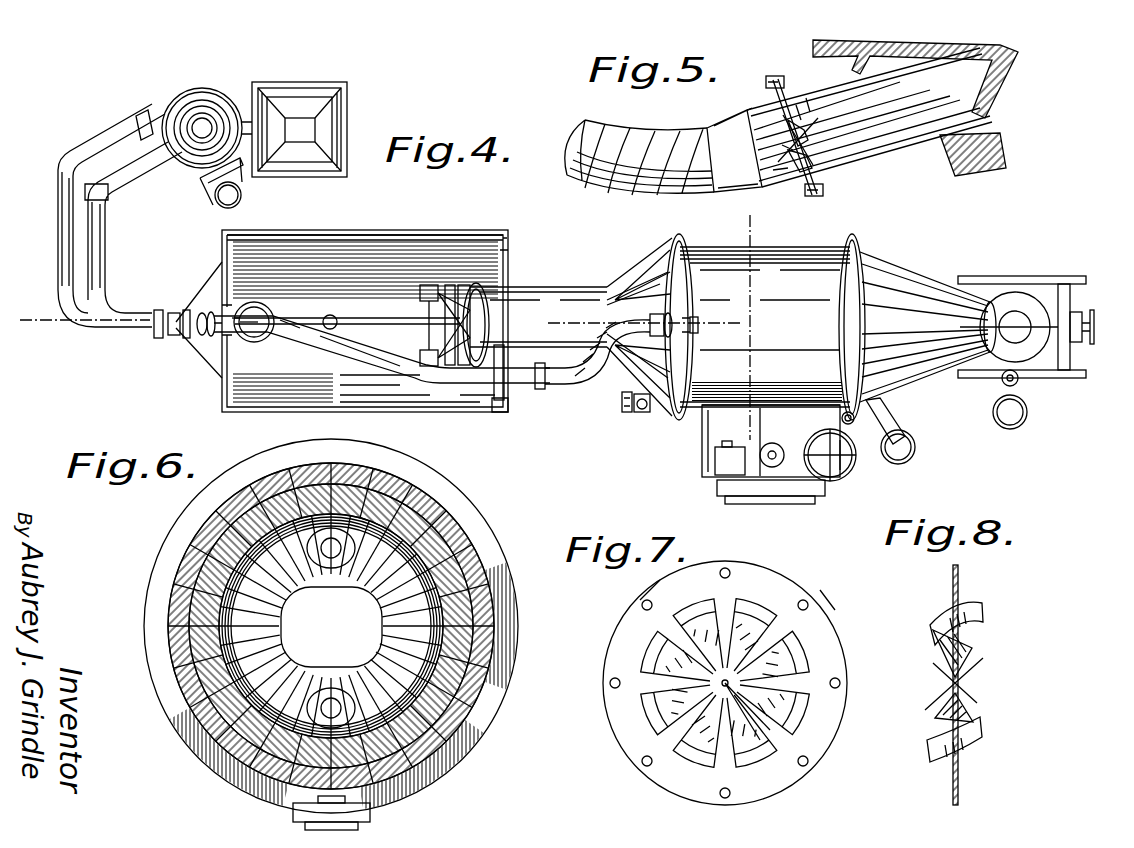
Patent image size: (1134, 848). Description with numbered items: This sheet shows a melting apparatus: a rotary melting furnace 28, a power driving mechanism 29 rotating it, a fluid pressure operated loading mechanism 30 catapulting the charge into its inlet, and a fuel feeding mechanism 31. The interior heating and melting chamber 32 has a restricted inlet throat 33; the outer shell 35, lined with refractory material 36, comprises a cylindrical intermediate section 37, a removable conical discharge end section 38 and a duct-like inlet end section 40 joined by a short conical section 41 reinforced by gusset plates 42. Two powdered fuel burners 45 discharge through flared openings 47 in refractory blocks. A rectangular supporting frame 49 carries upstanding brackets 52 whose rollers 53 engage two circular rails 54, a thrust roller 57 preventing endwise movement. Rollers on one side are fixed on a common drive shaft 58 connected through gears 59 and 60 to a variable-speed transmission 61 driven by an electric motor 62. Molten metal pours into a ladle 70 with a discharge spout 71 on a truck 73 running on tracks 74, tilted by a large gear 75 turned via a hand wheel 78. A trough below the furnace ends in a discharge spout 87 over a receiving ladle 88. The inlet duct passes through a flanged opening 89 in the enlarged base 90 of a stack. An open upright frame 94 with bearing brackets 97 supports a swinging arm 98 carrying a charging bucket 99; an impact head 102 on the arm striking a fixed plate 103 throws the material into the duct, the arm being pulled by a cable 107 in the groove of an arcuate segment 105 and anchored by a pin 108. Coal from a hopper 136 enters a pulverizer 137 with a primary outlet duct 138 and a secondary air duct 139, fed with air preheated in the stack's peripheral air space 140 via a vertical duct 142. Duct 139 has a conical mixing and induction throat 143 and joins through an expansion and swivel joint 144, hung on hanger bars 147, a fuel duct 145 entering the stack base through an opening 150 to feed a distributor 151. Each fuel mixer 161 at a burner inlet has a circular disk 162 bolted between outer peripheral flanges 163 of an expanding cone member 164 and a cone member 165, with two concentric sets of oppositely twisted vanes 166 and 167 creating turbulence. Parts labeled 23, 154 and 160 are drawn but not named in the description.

In FIG. 4, the hose coupling connection line 23 is at (30, 328).
In FIG. 4, the rotary melting furnace 28 is at (792, 246).
In FIG. 6, the rotary melting furnace 28 is at (509, 530).
In FIG. 4, the power driving mechanism 29 is at (857, 472).
In FIG. 4, the loading mechanism 30 is at (396, 298).
In FIG. 4, the fuel feeding mechanism 31 is at (182, 90).
In FIG. 6, the heating and melting chamber 32 is at (456, 702).
In FIG. 6, the restricted inlet throat 33 is at (296, 665).
In FIG. 6, the outer metallic shell 35 is at (461, 512).
In FIG. 6, the refractory material 36 is at (484, 646).
In FIG. 4, the intermediate section 37 is at (718, 256).
In FIG. 6, the intermediate section 37 is at (412, 500).
In FIG. 4, the conical discharge end section 38 is at (920, 274).
In FIG. 4, the inlet end section 40 is at (520, 286).
In FIG. 4, the short conical section 41 is at (664, 266).
In FIG. 4, the gusset plates 42 is at (630, 278).
In FIG. 5, the powdered fuel burners 45 is at (1006, 108).
In FIG. 6, the opening 47 is at (336, 566).
In FIG. 4, the rectangular supporting frame 49 is at (690, 410).
In FIG. 4, the upstanding brackets 52 is at (626, 414).
In FIG. 4, the rollers 53 is at (642, 414).
In FIG. 4, the circular rails 54 is at (680, 234).
In FIG. 6, the thrust roller 57 is at (372, 812).
In FIG. 4, the common drive shaft 58 is at (714, 412).
In FIG. 4, the gear 59 is at (790, 414).
In FIG. 4, the gear 60 is at (836, 478).
In FIG. 4, the variable-speed transmission 61 is at (800, 492).
In FIG. 4, the electric motor 62 is at (724, 464).
In FIG. 4, the container 70 is at (1016, 290).
In FIG. 4, the discharge spout 71 is at (1020, 382).
In FIG. 4, the truck 73 is at (1072, 296).
In FIG. 4, the tracks 74 is at (1072, 276).
In FIG. 4, the large gear 75 is at (1082, 340).
In FIG. 4, the hand wheel 78 is at (1096, 322).
In FIG. 4, the discharge spout 87 is at (902, 428).
In FIG. 4, the receiving ladle 88 is at (916, 450).
In FIG. 4, the flanged opening 89 is at (506, 250).
In FIG. 4, the stack base 90 is at (458, 230).
In FIG. 4, the open upright frame 94 is at (452, 285).
In FIG. 4, the bearing brackets 97 is at (427, 284).
In FIG. 4, the swinging arm 98 is at (338, 312).
In FIG. 4, the charging bucket 99 is at (258, 341).
In FIG. 4, the impact head 102 is at (328, 315).
In FIG. 4, the fixed stop plate 103 is at (472, 288).
In FIG. 4, the arcuate segment 105 is at (376, 338).
In FIG. 4, the cable 107 is at (368, 317).
In FIG. 4, the pin 108 is at (352, 340).
In FIG. 4, the hopper 136 is at (348, 98).
In FIG. 4, the pulverizer 137 is at (212, 96).
In FIG. 4, the primary fuel duct 138 is at (58, 226).
In FIG. 4, the air duct 139 is at (106, 235).
In FIG. 4, the peripheral air space 140 is at (366, 232).
In FIG. 4, the vertical duct 142 is at (242, 194).
In FIG. 4, the mixing and induction throat 143 is at (157, 308).
In FIG. 4, the expansion and swivel joint 144 is at (175, 312).
In FIG. 4, the fuel duct 145 is at (386, 364).
In FIG. 4, the hanger bars 147 is at (188, 308).
In FIG. 4, the opening 150 is at (205, 336).
In FIG. 4, the distributor 151 is at (506, 392).
In FIG. 4, the hose collar 154 is at (546, 386).
In FIG. 5, the hose collar 154 is at (727, 118).
In FIG. 4, the flexible hose 160 is at (582, 362).
In FIG. 5, the flexible hose 160 is at (630, 135).
In FIG. 5, the fuel mixer 161 is at (817, 143).
In FIG. 7, the fuel mixer 161 is at (839, 618).
In FIG. 8, the fuel mixer 161 is at (1009, 600).
In FIG. 5, the circular disk 162 is at (776, 78).
In FIG. 7, the circular disk 162 is at (834, 648).
In FIG. 8, the circular disk 162 is at (960, 776).
In FIG. 4, the outer peripheral flanges 163 is at (700, 320).
In FIG. 5, the outer peripheral flanges 163 is at (768, 80).
In FIG. 4, the expanding cone member 164 is at (648, 322).
In FIG. 5, the cone member 165 is at (876, 160).
In FIG. 5, the vanes 166 is at (788, 152).
In FIG. 7, the vanes 166 is at (774, 700).
In FIG. 8, the vanes 166 is at (970, 650).
In FIG. 5, the vanes 167 is at (824, 152).
In FIG. 7, the vanes 167 is at (764, 626).
In FIG. 8, the vanes 167 is at (984, 620).